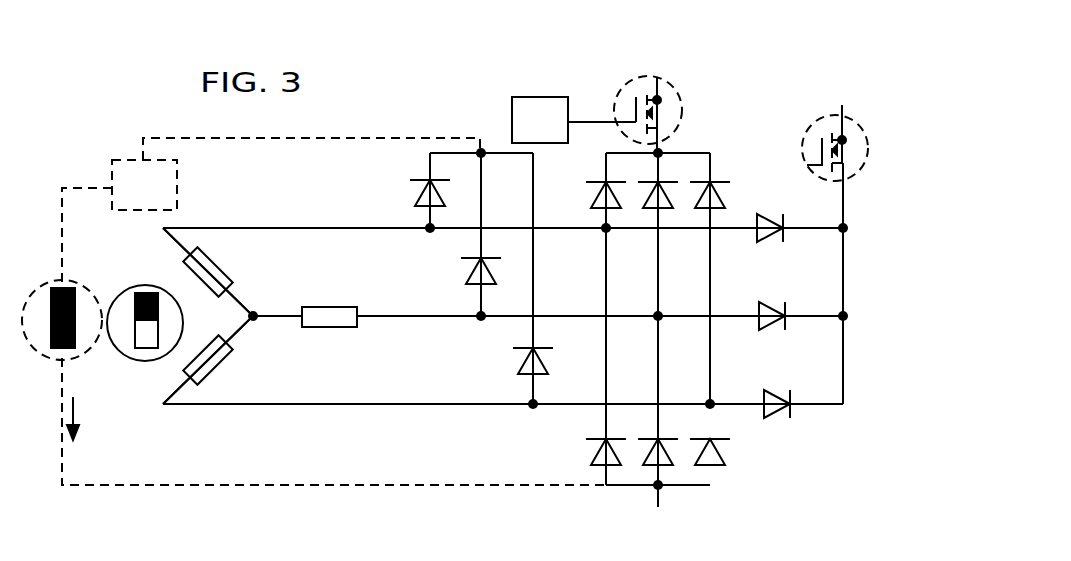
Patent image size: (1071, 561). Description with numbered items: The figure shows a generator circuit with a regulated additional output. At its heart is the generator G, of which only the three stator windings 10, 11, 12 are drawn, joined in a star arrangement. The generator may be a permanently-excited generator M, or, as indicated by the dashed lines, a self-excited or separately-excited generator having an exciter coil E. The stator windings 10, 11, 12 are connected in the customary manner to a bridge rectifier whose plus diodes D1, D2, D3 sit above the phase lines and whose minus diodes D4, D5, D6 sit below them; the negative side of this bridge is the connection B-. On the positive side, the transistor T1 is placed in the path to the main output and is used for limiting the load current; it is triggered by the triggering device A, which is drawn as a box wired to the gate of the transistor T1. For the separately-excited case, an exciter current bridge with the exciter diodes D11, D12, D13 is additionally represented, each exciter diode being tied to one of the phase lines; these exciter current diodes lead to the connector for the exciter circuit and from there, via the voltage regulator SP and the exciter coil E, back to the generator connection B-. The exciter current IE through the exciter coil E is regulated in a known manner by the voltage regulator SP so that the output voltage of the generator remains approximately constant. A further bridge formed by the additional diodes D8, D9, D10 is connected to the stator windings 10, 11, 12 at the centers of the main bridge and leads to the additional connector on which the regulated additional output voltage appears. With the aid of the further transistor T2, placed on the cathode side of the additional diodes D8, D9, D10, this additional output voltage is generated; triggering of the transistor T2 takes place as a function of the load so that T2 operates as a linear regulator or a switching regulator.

The stator winding 10 is at (343, 307).
The stator winding 11 is at (214, 268).
The stator winding 12 is at (215, 368).
The generator G is at (208, 316).
The exciter coil E is at (78, 300).
The permanently-excited generator M is at (158, 300).
The voltage regulator SP is at (157, 198).
The exciter current IE is at (90, 413).
The triggering device A is at (574, 120).
The transistor T1 is at (628, 122).
The further transistor T2 is at (803, 152).
The negative connection B− B- is at (669, 514).
The plus diode D1 is at (592, 206).
The plus diode D2 is at (642, 206).
The plus diode D3 is at (722, 196).
The minus diode D4 is at (590, 457).
The minus diode D5 is at (648, 458).
The minus diode D6 is at (722, 452).
The additional diode D8 is at (765, 212).
The additional diode D9 is at (771, 305).
The additional diode D10 is at (777, 392).
The exciter diode D11 is at (418, 191).
The exciter diode D12 is at (470, 279).
The exciter diode D13 is at (520, 366).